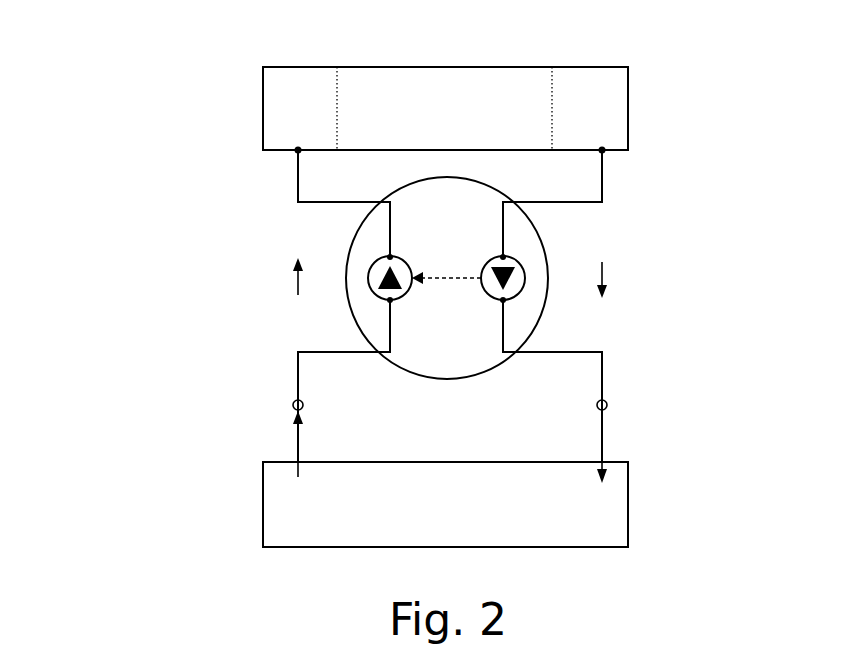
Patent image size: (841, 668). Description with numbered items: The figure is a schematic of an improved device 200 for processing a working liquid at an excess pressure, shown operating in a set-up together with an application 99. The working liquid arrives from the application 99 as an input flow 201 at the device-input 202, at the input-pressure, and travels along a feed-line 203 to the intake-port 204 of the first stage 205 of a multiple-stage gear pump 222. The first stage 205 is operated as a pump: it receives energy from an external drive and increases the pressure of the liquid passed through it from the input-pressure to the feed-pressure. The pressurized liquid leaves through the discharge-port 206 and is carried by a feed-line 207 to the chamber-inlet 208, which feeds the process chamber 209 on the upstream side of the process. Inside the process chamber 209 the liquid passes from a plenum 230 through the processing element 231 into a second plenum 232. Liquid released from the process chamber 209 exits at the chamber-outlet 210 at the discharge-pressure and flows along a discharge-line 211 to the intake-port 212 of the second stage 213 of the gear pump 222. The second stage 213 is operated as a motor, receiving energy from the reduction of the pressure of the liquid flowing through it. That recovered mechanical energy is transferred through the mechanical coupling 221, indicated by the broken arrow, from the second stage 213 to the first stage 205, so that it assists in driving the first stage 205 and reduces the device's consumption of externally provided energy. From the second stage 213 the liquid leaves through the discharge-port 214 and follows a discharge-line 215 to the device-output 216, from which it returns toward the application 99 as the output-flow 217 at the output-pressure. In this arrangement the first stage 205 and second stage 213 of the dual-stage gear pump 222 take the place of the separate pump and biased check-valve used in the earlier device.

The device 200 is at (106, 138).
The application 99 is at (290, 503).
The input flow 201 is at (298, 442).
The device-input 202 is at (293, 405).
The feed-line 203 is at (298, 352).
The intake-port 204 is at (389, 301).
The first stage 205 is at (368, 279).
The discharge-port 206 is at (388, 256).
The feed-line 207 is at (298, 202).
The chamber-inlet 208 is at (297, 151).
The process chamber 209 is at (545, 64).
The chamber-outlet 210 is at (603, 151).
The discharge-line 211 is at (602, 202).
The intake-port 212 is at (505, 256).
The second stage 213 is at (523, 278).
The discharge-port 214 is at (505, 301).
The discharge-line 215 is at (602, 352).
The device-output 216 is at (607, 404).
The output-flow 217 is at (602, 437).
The mechanical coupling 221 is at (443, 271).
The multiple-stage gear pump 222 is at (472, 381).
The plenum 230 is at (298, 83).
The processing element 231 is at (430, 80).
The plenum 232 is at (604, 82).